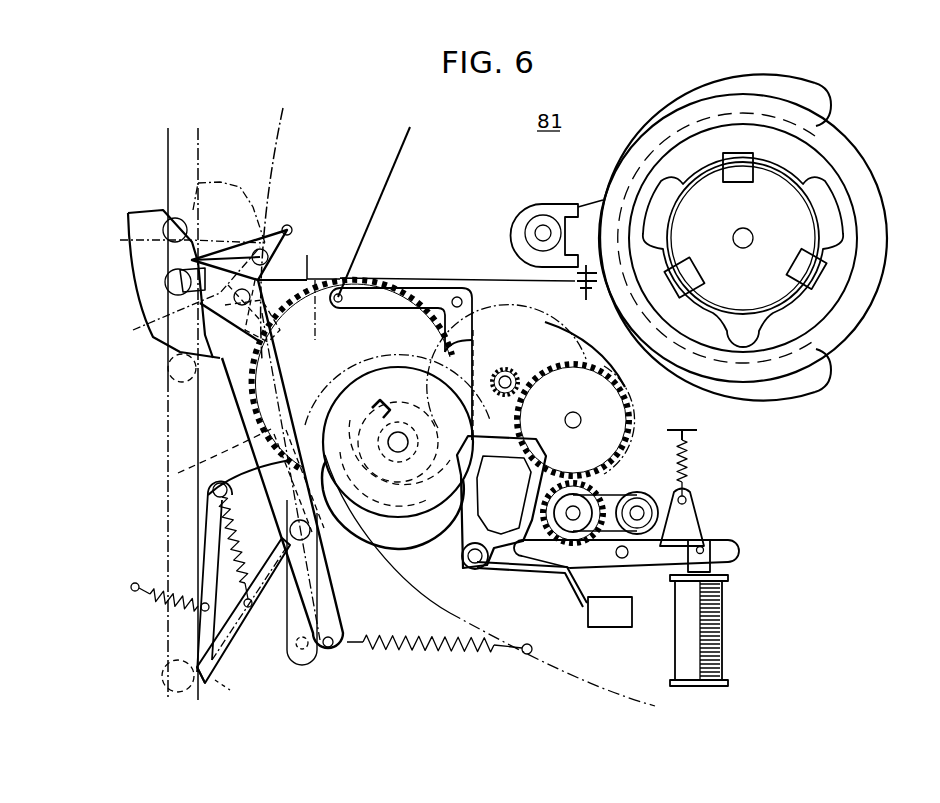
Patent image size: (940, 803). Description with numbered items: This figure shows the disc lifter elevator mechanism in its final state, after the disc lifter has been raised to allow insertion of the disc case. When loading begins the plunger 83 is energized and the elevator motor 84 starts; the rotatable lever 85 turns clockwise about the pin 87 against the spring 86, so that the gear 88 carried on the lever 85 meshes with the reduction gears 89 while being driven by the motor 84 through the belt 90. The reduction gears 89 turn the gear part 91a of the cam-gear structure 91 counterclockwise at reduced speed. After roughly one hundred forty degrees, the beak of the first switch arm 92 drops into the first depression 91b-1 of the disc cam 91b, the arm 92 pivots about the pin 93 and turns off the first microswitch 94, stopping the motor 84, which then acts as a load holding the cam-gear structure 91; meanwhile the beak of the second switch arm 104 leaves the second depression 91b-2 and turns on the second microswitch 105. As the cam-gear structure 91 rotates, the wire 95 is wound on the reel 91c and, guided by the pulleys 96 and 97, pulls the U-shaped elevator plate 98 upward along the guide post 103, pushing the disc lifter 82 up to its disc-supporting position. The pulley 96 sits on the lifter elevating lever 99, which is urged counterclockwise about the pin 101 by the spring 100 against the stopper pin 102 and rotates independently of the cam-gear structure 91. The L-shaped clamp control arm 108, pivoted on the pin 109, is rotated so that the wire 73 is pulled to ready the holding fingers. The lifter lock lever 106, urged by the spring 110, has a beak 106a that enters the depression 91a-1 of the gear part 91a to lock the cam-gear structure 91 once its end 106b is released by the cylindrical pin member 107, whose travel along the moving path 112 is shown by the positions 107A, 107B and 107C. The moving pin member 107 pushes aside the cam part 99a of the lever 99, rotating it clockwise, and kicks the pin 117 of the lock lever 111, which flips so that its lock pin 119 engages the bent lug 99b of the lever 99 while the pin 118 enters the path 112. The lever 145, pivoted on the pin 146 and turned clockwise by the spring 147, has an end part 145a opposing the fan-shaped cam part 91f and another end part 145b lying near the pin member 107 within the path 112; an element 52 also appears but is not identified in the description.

The tape guide curve 52 is at (272, 132).
The wire 73 is at (396, 162).
The disc lifter 82 is at (886, 256).
The plunger 83 is at (724, 610).
The elevator motor 84 is at (650, 492).
The rotatable lever 85 is at (588, 562).
The spring 86 is at (690, 460).
The pin 87 is at (624, 560).
The gear 88 is at (543, 512).
The reduction gears 89 is at (586, 344).
The belt 90 is at (612, 496).
The cam-gear structure 91 is at (360, 343).
The gear part 91a is at (400, 352).
The depression 91a-1 is at (272, 428).
The disc cam 91b is at (420, 532).
The first depression 91b-1 is at (452, 480).
The second depression 91b-2 is at (360, 372).
The reel 91c is at (366, 468).
The fan-shaped cam part 91f is at (397, 455).
The first switch arm 92 is at (514, 575).
The pin 93 is at (470, 570).
The first microswitch 94 is at (612, 628).
The wire 95 is at (463, 277).
The pulley 96 is at (270, 318).
The pulley 97 is at (575, 286).
The U-shaped elevator plate 98 is at (690, 98).
The lifter elevating lever 99 is at (240, 380).
The cam part 99a is at (178, 280).
The bent lug 99b is at (310, 262).
The spring 100 is at (437, 655).
The pin 101 is at (290, 530).
The stopper pin 102 is at (334, 642).
The guide post 103 is at (543, 224).
The second switch arm 104 is at (552, 452).
The second microswitch 105 is at (611, 678).
The lifter lock lever 106 is at (242, 640).
The beak 106a is at (178, 476).
The end part 106b is at (203, 682).
The cylindrical pin member 107 is at (165, 668).
The position of pin member 107A is at (168, 372).
The position of pin member 107B is at (165, 290).
The position of pin member 107C is at (170, 218).
The L-shaped clamp control arm 108 is at (402, 288).
The pin 109 is at (464, 302).
The spring 110 is at (205, 540).
The lock lever 111 is at (274, 238).
The moving path 112 is at (165, 447).
The pin 117 is at (205, 185).
The pin 118 is at (130, 243).
The lock pin 119 is at (292, 226).
The lever 145 is at (205, 566).
The end part 145a is at (378, 398).
The end part 145b is at (248, 686).
The pin 146 is at (212, 492).
The spring 147 is at (133, 600).